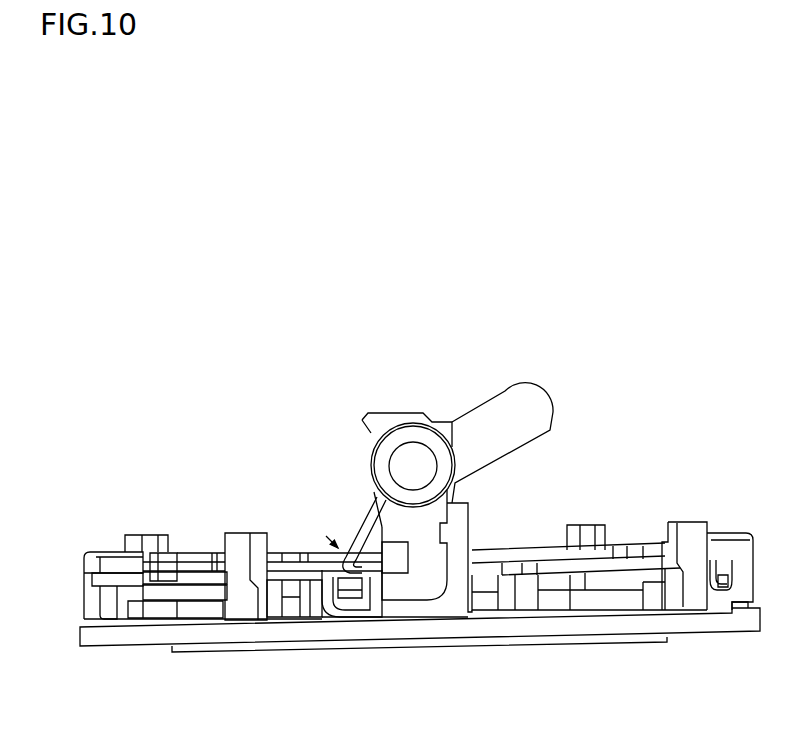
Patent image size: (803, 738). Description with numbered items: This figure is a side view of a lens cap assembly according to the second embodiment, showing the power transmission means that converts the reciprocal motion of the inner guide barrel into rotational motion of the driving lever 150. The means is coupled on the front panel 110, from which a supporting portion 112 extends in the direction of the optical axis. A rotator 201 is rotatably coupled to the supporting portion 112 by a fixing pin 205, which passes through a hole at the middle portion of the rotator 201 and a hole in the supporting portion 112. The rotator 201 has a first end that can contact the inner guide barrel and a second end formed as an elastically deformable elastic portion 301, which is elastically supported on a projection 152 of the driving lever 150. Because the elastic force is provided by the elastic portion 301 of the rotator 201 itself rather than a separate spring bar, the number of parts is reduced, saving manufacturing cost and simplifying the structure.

The front panel 110 is at (703, 632).
The supporting portion 112 is at (429, 626).
The driving lever 150 is at (505, 545).
The projection 152 is at (322, 557).
The rotator 201 is at (547, 415).
The fixing pin 205 is at (407, 450).
The elastic portion 301 is at (358, 522).